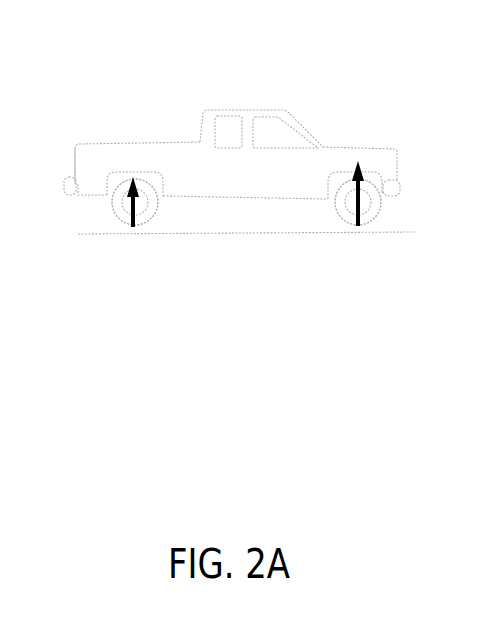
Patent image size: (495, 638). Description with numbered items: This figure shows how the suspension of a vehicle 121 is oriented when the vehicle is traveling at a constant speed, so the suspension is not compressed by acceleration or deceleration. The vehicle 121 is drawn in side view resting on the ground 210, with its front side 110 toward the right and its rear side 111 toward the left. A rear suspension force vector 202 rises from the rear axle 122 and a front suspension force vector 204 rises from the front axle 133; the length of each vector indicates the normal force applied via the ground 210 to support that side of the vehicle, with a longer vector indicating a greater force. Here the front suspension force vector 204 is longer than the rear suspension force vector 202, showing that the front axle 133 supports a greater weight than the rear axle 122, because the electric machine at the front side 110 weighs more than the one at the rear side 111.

The front side 110 is at (391, 142).
The rear side 111 is at (62, 155).
The vehicle 121 is at (226, 97).
The rear axle 122 is at (109, 213).
The front axle 133 is at (390, 208).
The rear suspension force vector 202 is at (134, 226).
The front suspension force vector 204 is at (359, 225).
The ground 210 is at (242, 233).